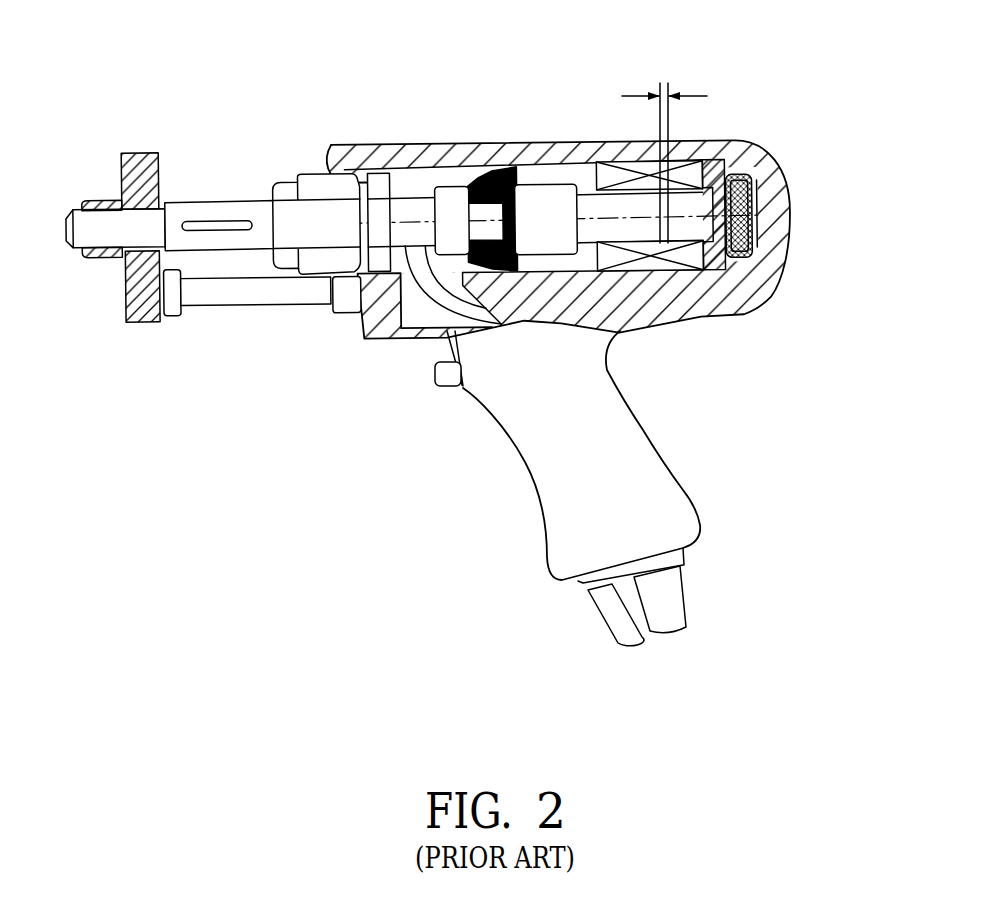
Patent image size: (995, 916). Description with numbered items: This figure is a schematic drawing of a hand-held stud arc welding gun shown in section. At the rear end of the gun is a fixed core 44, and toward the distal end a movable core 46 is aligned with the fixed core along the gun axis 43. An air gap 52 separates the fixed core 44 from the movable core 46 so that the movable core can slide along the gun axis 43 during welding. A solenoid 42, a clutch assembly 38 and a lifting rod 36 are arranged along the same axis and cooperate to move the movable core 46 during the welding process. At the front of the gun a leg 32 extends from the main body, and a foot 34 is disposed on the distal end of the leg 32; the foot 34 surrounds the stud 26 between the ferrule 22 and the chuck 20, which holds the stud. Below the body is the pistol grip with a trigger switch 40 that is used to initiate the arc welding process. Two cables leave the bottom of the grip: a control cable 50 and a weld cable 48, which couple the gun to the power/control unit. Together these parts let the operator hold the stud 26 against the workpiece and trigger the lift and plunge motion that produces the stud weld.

The chuck 20 is at (184, 204).
The ferrule 22 is at (85, 199).
The stud 26 is at (114, 261).
The leg 32 is at (192, 309).
The foot 34 is at (143, 152).
The lifting rod 36 is at (315, 207).
The clutch assembly 38 is at (530, 180).
The trigger switch 40 is at (437, 387).
The solenoid 42 is at (691, 176).
The gun axis 43 is at (762, 211).
The fixed core 44 is at (698, 231).
The movable core 46 is at (631, 231).
The weld cable 48 is at (673, 600).
The control cable 50 is at (611, 612).
The air gap 52 is at (664, 82).